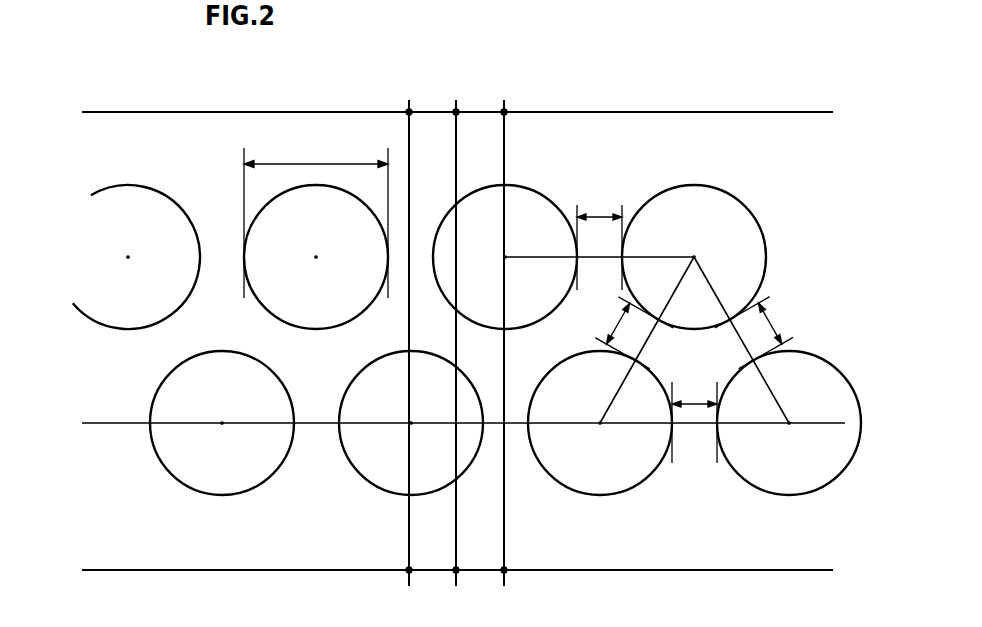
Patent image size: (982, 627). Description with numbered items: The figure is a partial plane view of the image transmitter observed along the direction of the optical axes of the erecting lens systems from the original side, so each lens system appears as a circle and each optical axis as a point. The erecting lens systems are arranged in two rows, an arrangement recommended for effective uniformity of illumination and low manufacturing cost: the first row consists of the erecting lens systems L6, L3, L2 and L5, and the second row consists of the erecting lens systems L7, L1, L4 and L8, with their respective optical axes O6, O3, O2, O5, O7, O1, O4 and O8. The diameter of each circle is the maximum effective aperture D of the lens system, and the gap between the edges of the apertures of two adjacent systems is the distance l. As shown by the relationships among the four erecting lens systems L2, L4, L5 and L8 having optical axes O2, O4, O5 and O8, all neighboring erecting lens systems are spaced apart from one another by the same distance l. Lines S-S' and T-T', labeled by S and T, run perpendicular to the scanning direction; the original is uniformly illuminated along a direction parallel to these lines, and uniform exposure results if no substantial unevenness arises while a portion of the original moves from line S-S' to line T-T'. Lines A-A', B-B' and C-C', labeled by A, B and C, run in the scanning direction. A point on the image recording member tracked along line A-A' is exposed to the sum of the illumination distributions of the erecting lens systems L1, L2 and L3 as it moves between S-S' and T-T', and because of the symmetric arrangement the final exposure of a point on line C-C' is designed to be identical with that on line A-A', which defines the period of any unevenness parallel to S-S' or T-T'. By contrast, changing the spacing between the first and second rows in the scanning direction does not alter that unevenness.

The erecting lens system L1 is at (411, 423).
The erecting lens system L2 is at (505, 257).
The erecting lens system L3 is at (316, 257).
The erecting lens system L4 is at (600, 423).
The erecting lens system L5 is at (694, 257).
The erecting lens system L6 is at (136, 257).
The erecting lens system L7 is at (222, 423).
The erecting lens system L8 is at (789, 423).
The optical axis O1 is at (411, 423).
The optical axis O2 is at (505, 257).
The optical axis O3 is at (316, 256).
The optical axis O4 is at (600, 423).
The optical axis O5 is at (694, 257).
The optical axis O6 is at (128, 255).
The optical axis O7 is at (222, 423).
The optical axis O8 is at (789, 423).
The line A-A' A is at (420, 335).
The line B-B' B is at (467, 335).
The line C-C' C is at (515, 335).
The maximum effective aperture D is at (316, 219).
The distance between edges of adjacent apertures l is at (685, 329).
The line T-T' T is at (461, 113).
The line S-S' S is at (461, 571).